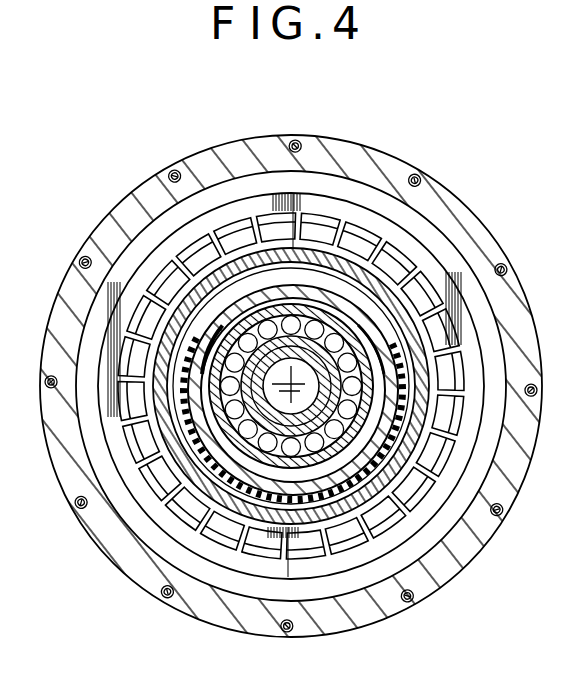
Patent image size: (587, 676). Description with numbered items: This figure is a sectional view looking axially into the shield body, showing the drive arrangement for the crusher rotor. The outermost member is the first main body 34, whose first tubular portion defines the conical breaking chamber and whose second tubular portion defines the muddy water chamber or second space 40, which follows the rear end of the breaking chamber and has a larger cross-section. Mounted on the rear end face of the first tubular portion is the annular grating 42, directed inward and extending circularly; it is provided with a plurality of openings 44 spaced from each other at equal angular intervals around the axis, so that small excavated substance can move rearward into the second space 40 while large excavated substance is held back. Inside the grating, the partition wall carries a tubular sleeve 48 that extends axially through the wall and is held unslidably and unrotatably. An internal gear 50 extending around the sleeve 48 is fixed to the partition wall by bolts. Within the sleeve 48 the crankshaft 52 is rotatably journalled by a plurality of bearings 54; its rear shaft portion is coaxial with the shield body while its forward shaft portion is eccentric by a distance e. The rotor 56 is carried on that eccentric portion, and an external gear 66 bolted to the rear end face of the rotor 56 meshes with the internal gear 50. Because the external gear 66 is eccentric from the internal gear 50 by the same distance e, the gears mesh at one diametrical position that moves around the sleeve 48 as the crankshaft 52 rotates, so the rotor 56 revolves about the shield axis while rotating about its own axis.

The first main body 34 is at (167, 170).
The second space 40 is at (143, 230).
The annular grating 42 is at (153, 263).
The openings 44 is at (138, 318).
The rotor 56 is at (147, 333).
The internal gear 50 is at (167, 406).
The external gear 66 is at (190, 377).
The crankshaft 52 is at (185, 478).
The tubular sleeve 48 is at (218, 423).
The bearings 54 is at (255, 458).